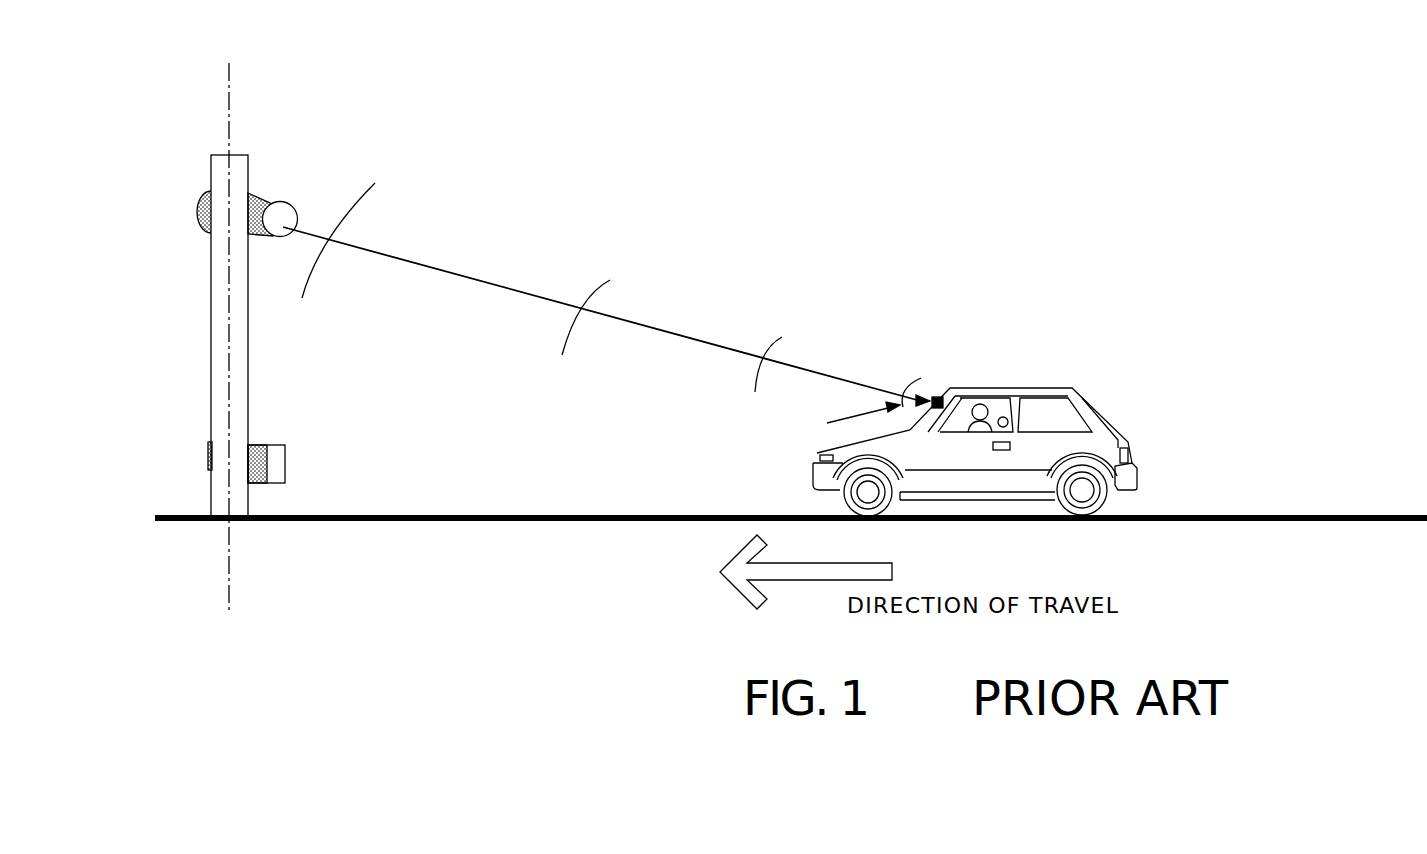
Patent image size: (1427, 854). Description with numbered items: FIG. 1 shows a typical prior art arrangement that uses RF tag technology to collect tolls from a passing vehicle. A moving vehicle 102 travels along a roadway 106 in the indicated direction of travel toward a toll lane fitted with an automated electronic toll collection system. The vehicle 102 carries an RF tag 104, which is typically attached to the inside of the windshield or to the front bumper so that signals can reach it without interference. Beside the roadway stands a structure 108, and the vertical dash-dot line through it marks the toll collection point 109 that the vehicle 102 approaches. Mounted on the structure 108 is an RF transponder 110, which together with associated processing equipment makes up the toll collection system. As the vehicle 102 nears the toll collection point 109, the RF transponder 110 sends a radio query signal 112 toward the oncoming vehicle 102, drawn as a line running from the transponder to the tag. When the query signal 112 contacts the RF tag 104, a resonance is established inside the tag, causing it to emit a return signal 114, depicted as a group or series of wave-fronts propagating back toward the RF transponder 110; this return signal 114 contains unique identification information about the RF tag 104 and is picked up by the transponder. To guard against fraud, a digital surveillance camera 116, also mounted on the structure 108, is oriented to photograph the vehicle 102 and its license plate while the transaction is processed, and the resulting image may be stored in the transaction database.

The vehicle 102 is at (1010, 388).
The RF tag 104 is at (937, 397).
The roadway 106 is at (557, 515).
The structure 108 is at (212, 385).
The toll collection point 109 is at (228, 82).
The RF transponder 110 is at (278, 205).
The query signal 112 is at (472, 277).
The return signal 114 is at (602, 311).
The digital surveillance camera 116 is at (263, 445).